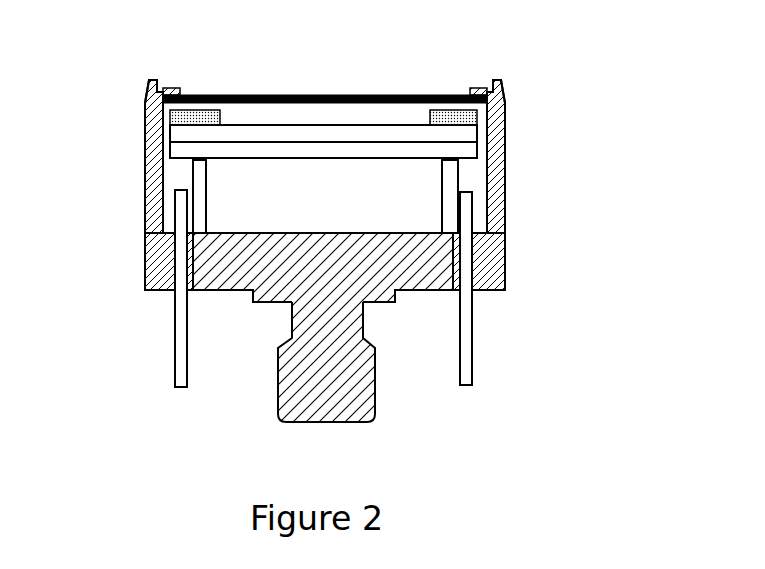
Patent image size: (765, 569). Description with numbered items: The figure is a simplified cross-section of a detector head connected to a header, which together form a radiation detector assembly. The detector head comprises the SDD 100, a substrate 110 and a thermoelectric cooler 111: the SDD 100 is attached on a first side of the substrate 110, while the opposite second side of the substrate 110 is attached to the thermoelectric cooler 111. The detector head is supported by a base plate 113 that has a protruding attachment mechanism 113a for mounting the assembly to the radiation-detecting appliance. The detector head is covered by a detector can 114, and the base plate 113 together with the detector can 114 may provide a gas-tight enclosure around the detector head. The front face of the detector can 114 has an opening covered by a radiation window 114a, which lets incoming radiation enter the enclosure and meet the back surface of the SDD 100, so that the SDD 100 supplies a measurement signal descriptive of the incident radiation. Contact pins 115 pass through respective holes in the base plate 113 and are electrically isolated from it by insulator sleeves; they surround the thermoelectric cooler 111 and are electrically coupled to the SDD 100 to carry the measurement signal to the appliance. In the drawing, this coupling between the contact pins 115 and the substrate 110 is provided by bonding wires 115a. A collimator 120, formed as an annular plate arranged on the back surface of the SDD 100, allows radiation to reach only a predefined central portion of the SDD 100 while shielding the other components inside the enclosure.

The SDD 100 is at (462, 135).
The substrate 110 is at (460, 152).
The thermoelectric cooler 111 is at (380, 210).
The base plate 113 is at (420, 278).
The attachment mechanism 113a is at (292, 362).
The detector can 114 is at (143, 108).
The radiation window 114a is at (418, 94).
The contact pins 115 is at (178, 312).
The bonding wires 115a is at (197, 163).
The collimator 120 is at (468, 115).